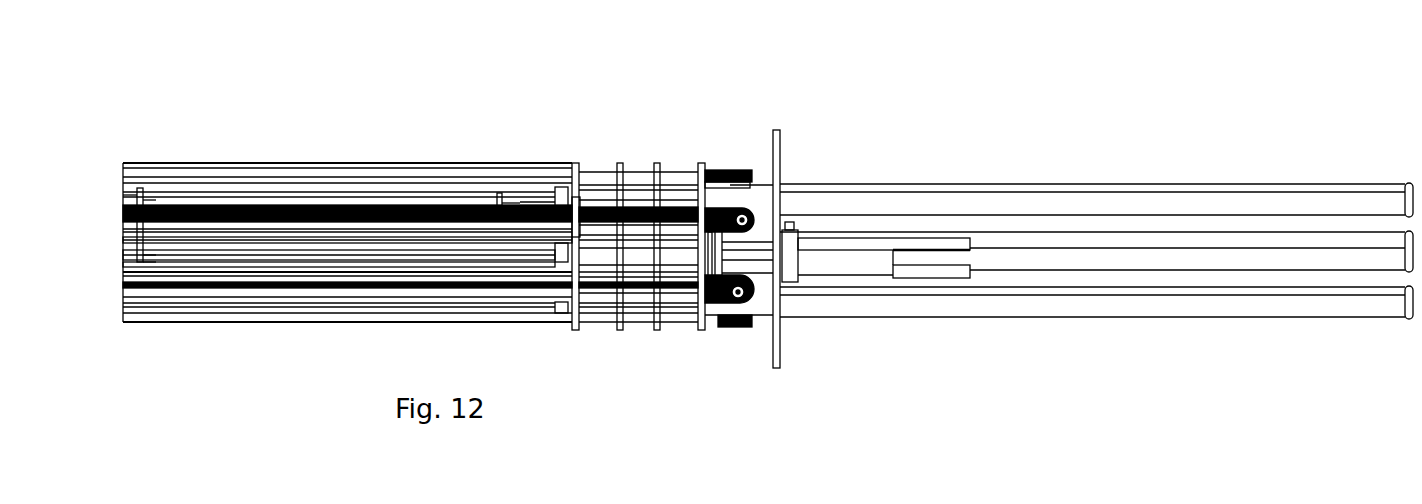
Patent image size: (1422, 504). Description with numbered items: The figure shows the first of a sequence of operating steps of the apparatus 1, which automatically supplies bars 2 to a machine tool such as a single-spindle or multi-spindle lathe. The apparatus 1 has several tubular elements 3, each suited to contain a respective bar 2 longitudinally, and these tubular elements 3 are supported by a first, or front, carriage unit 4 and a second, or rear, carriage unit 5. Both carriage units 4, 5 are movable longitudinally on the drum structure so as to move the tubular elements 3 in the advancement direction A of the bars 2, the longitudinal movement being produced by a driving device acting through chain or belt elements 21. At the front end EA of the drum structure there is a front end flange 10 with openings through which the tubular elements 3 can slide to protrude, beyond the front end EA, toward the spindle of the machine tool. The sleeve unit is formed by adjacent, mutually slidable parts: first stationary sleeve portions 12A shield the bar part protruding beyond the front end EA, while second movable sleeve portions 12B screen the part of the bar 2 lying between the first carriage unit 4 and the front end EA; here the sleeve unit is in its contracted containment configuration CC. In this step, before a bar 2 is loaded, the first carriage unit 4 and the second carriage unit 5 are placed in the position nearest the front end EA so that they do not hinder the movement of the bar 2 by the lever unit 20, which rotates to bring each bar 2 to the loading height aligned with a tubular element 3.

The apparatus 1 is at (760, 92).
The bar 2 is at (483, 203).
The tubular element 3 is at (1252, 203).
The first carriage unit 4 is at (672, 312).
The second carriage unit 5 is at (593, 183).
The front end flange 10 is at (780, 353).
The first stationary sleeve portion 12A is at (963, 240).
The second movable sleeve portion 12B is at (876, 262).
The lever unit 20 is at (160, 200).
The chain or belt element 21 is at (740, 330).
The advancement direction A is at (990, 261).
The contracted containment configuration CC is at (940, 193).
The front end EA is at (830, 132).